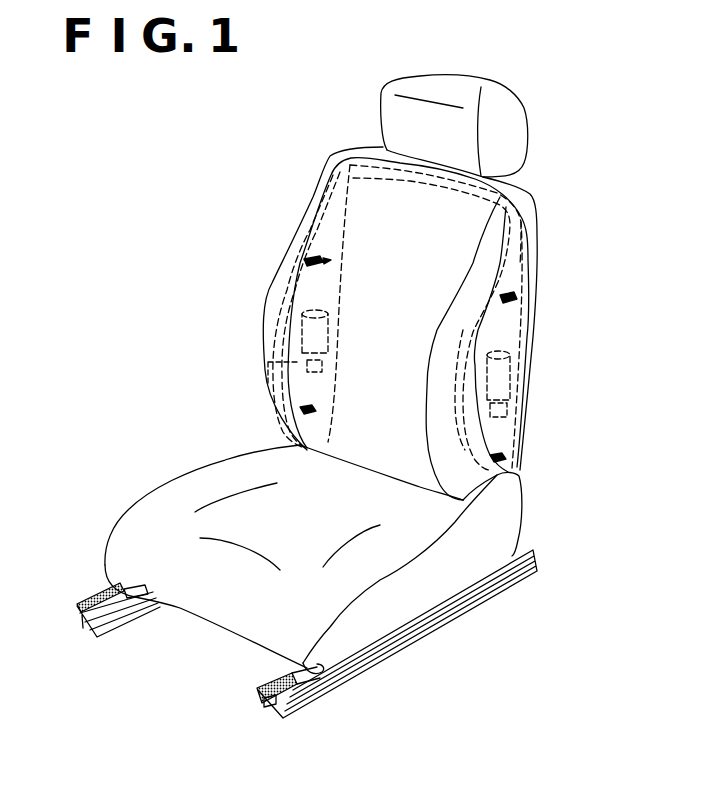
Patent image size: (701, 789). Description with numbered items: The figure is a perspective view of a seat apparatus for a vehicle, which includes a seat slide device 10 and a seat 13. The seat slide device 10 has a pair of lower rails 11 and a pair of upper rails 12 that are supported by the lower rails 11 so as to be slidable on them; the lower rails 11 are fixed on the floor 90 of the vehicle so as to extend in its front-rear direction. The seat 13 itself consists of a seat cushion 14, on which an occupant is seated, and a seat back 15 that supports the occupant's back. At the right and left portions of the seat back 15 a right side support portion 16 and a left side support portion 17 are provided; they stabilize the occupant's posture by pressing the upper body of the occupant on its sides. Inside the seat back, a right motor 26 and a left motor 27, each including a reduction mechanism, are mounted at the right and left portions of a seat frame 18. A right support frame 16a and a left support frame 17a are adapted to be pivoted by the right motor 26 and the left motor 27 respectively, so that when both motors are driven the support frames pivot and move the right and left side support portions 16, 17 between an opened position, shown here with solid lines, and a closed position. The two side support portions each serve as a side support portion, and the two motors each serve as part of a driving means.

The seat slide device 10 is at (110, 652).
The lower rails 11 is at (80, 621).
The upper rails 12 is at (142, 602).
The seat 13 is at (124, 342).
The seat cushion 14 is at (212, 497).
The seat back 15 is at (380, 223).
The right side support portion 16 is at (270, 292).
The right support frame 16a is at (265, 387).
The left side support portion 17 is at (443, 347).
The left support frame 17a is at (482, 434).
The seat frame 18 is at (516, 245).
The right motor 26 is at (280, 333).
The left motor 27 is at (503, 384).
The floor 90 is at (463, 679).